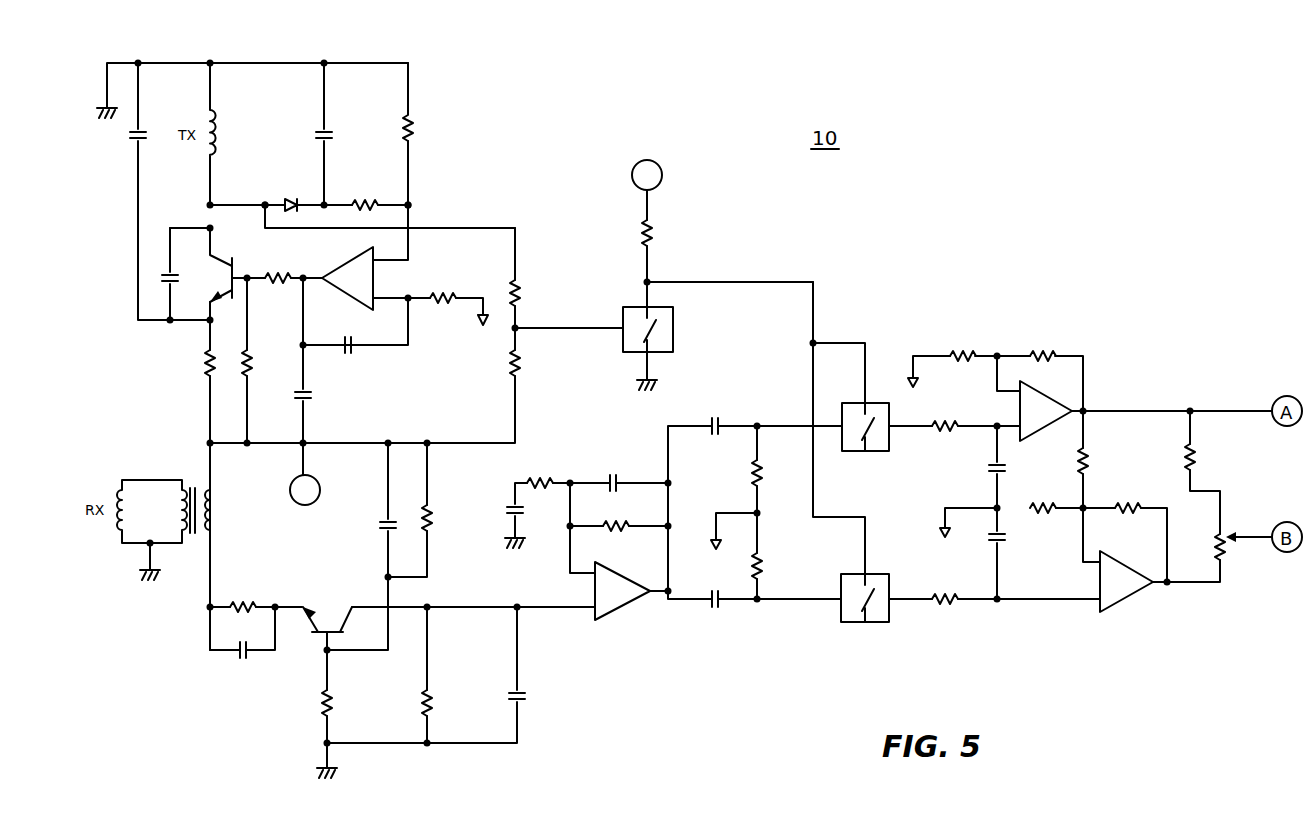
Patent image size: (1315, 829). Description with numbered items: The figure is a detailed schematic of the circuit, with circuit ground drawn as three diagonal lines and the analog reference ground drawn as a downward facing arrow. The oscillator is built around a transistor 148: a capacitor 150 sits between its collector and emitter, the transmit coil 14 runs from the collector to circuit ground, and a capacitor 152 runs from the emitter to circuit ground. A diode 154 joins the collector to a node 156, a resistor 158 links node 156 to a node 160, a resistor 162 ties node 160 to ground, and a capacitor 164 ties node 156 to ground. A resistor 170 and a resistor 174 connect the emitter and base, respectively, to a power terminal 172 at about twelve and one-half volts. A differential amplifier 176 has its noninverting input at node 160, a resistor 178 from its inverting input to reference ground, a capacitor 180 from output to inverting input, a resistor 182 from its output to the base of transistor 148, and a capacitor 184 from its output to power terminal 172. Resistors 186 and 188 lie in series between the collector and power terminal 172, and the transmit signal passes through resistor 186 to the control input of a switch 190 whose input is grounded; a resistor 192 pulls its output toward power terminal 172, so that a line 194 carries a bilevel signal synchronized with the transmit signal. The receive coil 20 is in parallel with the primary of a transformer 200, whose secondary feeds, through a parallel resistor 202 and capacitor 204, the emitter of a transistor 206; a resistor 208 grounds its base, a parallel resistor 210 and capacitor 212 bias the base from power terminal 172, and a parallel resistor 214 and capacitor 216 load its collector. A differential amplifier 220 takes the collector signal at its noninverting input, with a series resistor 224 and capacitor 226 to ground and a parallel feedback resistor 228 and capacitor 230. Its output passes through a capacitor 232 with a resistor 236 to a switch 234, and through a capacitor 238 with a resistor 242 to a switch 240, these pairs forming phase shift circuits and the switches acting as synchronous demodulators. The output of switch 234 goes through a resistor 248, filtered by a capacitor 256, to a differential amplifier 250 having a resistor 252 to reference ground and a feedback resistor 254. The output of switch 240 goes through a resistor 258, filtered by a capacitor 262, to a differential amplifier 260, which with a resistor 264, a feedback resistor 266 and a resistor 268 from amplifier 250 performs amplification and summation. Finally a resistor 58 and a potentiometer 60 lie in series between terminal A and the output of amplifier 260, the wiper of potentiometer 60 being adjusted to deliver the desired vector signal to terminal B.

The coil 14 is at (216, 132).
The receive coil 20 is at (115, 490).
The resistor 58 is at (1198, 455).
The potentiometer 60 is at (1225, 540).
The transistor 148 is at (220, 262).
The capacitor 150 is at (178, 278).
The capacitor 152 is at (145, 137).
The diode 154 is at (268, 202).
The node 156 is at (298, 203).
The resistor 158 is at (378, 172).
The node 160 is at (412, 204).
The resistor 162 is at (415, 130).
The capacitor 164 is at (332, 137).
The resistor 170 is at (205, 365).
The power terminal 172 is at (658, 180).
The resistor 174 is at (250, 365).
The differential amplifier 176 is at (380, 282).
The resistor 178 is at (440, 300).
The capacitor 180 is at (350, 352).
The resistor 182 is at (278, 275).
The capacitor 184 is at (311, 395).
The resistor 186 is at (518, 292).
The resistor 188 is at (510, 362).
The switch 190 is at (673, 328).
The resistor 192 is at (652, 232).
The line 194 is at (718, 281).
The transformer 200 is at (207, 473).
The resistor 202 is at (245, 603).
The capacitor 204 is at (243, 660).
The transistor 206 is at (312, 630).
The resistor 208 is at (331, 700).
The resistor 210 is at (432, 520).
The capacitor 212 is at (380, 530).
The resistor 214 is at (432, 700).
The capacitor 216 is at (521, 695).
The differential amplifier 220 is at (625, 612).
The resistor 224 is at (540, 480).
The capacitor 226 is at (520, 515).
The resistor 228 is at (612, 530).
The capacitor 230 is at (636, 440).
The capacitor 232 is at (716, 420).
The switch 234 is at (880, 400).
The resistor 236 is at (752, 470).
The capacitor 238 is at (716, 606).
The switch 240 is at (868, 624).
The resistor 242 is at (762, 565).
The resistor 248 is at (945, 405).
The differential amplifier 250 is at (1035, 395).
The resistor 252 is at (960, 352).
The resistor 254 is at (1042, 352).
The capacitor 256 is at (990, 468).
The resistor 258 is at (945, 604).
The differential amplifier 260 is at (1130, 570).
The capacitor 262 is at (1005, 537).
The resistor 264 is at (1040, 504).
The resistor 266 is at (1128, 504).
The resistor 268 is at (1090, 462).